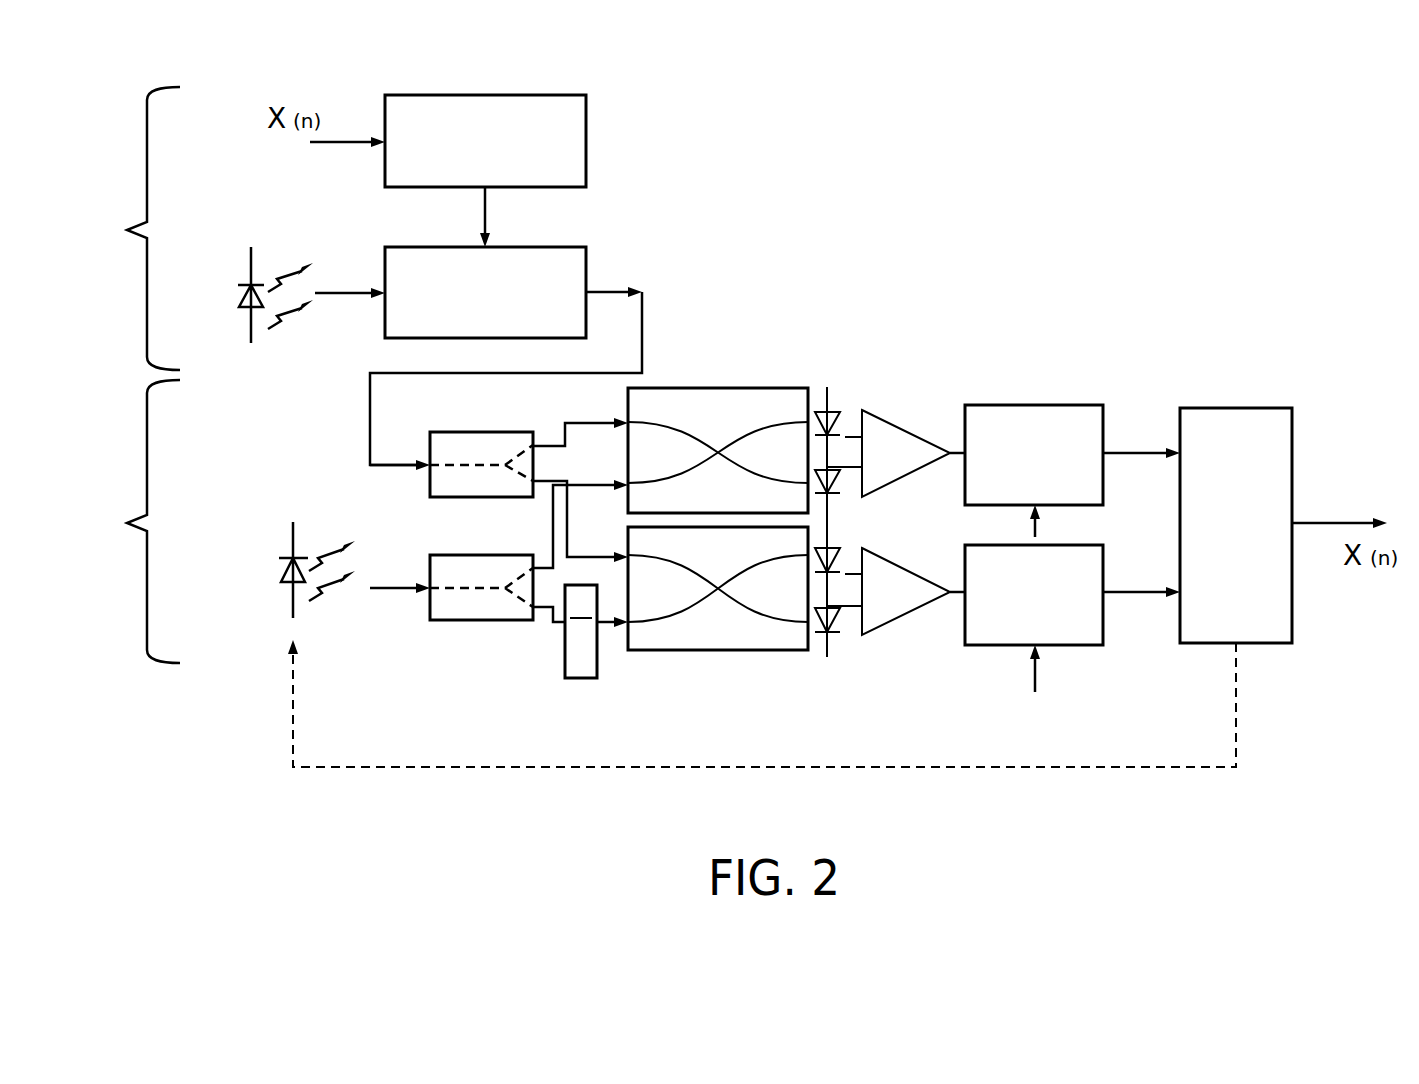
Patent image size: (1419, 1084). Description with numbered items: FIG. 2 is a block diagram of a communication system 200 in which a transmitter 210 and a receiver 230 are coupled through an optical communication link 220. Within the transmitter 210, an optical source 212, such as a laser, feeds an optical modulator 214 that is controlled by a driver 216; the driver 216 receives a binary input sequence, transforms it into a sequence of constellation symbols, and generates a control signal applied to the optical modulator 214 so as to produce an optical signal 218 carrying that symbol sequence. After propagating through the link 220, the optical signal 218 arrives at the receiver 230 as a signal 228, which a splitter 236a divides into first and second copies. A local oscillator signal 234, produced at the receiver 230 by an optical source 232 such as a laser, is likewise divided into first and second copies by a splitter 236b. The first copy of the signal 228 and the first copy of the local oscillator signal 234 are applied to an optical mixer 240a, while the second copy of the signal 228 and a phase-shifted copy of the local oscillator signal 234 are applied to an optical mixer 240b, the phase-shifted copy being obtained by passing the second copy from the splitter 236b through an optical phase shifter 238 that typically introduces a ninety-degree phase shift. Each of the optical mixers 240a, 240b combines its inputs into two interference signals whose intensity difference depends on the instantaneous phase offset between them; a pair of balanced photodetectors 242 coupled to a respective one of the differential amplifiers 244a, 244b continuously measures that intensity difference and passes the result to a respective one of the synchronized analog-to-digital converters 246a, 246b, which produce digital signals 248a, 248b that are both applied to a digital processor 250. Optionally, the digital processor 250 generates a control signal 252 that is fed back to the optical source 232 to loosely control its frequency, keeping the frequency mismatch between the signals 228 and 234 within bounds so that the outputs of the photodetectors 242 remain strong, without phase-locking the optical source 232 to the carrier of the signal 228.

The communication system 200 is at (243, 795).
The transmitter 210 is at (129, 228).
The optical source 212 is at (240, 310).
The optical modulator 214 is at (550, 245).
The driver 216 is at (517, 95).
The optical signal 218 is at (608, 287).
The optical communication link 220 is at (647, 338).
The signal 228 is at (395, 465).
The receiver 230 is at (129, 521).
The optical source 232 is at (283, 577).
The local oscillator signal 234 is at (392, 588).
The splitter 236a is at (455, 432).
The splitter 236b is at (480, 620).
The optical phase shifter 238 is at (581, 678).
The optical mixer 240a is at (715, 388).
The optical mixer 240b is at (688, 650).
The balanced photodetectors 242 is at (830, 412).
The differential amplifier 244a is at (897, 410).
The differential amplifier 244b is at (897, 622).
The analog-to-digital converter 246a is at (1033, 405).
The analog-to-digital converter 246b is at (1080, 645).
The digital signal 248a is at (1125, 453).
The digital signal 248b is at (1130, 592).
The digital processor 250 is at (1238, 408).
The control signal 252 is at (1240, 740).